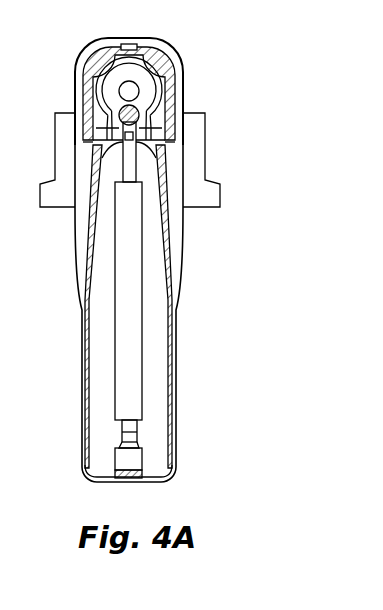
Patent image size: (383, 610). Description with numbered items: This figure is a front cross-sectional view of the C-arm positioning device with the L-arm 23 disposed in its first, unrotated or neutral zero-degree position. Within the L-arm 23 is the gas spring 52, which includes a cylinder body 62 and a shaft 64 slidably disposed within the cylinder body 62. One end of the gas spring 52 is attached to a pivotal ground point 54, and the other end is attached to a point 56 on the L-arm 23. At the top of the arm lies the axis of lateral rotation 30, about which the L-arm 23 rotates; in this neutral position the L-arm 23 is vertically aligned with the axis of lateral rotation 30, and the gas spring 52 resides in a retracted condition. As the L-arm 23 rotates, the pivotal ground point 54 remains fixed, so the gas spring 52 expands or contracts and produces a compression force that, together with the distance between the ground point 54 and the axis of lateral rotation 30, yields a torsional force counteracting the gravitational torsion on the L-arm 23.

The axis of lateral rotation 30 is at (129, 91).
The pivotal ground point 54 is at (185, 92).
The gas spring 52 is at (140, 168).
The L-arm 23 is at (185, 232).
The cylinder body 62 is at (143, 322).
The shaft 64 is at (140, 427).
The point on the L-arm 56 is at (131, 450).